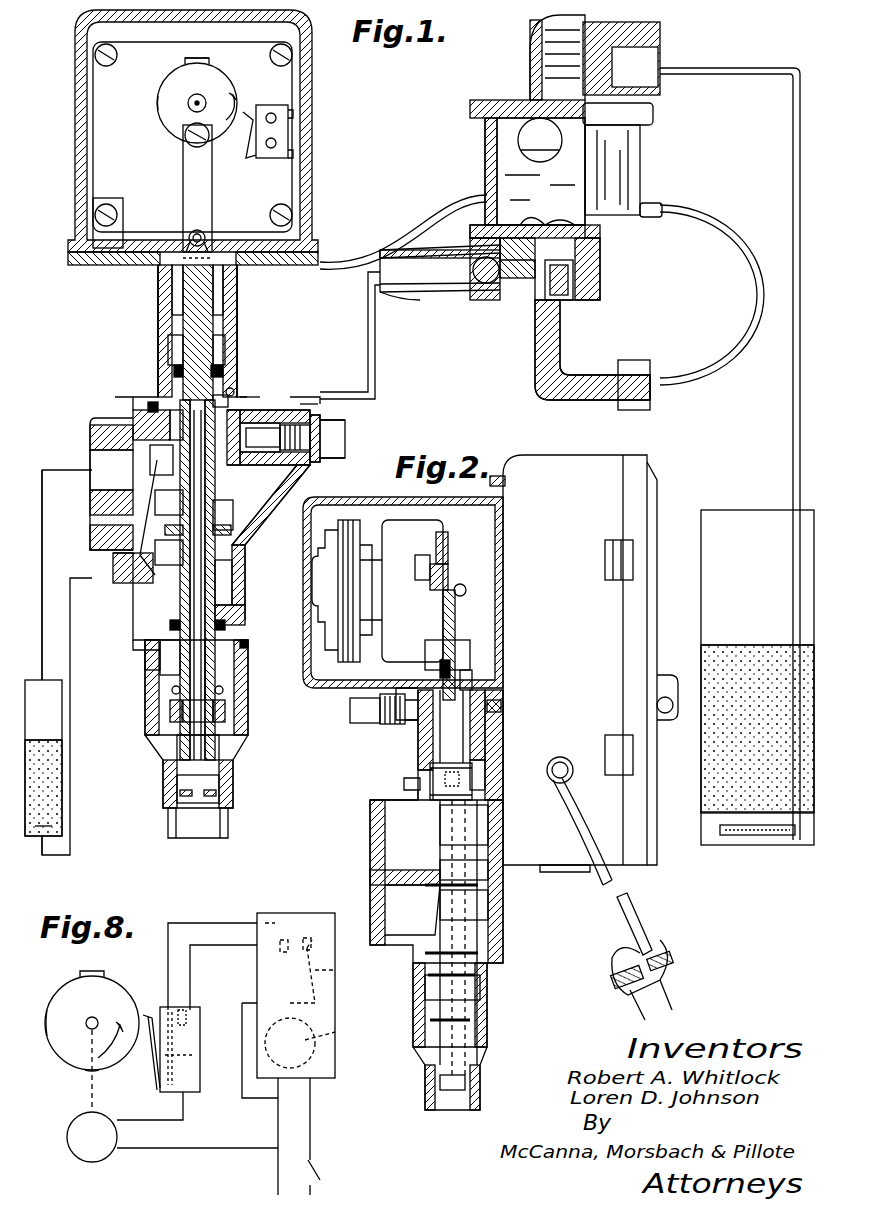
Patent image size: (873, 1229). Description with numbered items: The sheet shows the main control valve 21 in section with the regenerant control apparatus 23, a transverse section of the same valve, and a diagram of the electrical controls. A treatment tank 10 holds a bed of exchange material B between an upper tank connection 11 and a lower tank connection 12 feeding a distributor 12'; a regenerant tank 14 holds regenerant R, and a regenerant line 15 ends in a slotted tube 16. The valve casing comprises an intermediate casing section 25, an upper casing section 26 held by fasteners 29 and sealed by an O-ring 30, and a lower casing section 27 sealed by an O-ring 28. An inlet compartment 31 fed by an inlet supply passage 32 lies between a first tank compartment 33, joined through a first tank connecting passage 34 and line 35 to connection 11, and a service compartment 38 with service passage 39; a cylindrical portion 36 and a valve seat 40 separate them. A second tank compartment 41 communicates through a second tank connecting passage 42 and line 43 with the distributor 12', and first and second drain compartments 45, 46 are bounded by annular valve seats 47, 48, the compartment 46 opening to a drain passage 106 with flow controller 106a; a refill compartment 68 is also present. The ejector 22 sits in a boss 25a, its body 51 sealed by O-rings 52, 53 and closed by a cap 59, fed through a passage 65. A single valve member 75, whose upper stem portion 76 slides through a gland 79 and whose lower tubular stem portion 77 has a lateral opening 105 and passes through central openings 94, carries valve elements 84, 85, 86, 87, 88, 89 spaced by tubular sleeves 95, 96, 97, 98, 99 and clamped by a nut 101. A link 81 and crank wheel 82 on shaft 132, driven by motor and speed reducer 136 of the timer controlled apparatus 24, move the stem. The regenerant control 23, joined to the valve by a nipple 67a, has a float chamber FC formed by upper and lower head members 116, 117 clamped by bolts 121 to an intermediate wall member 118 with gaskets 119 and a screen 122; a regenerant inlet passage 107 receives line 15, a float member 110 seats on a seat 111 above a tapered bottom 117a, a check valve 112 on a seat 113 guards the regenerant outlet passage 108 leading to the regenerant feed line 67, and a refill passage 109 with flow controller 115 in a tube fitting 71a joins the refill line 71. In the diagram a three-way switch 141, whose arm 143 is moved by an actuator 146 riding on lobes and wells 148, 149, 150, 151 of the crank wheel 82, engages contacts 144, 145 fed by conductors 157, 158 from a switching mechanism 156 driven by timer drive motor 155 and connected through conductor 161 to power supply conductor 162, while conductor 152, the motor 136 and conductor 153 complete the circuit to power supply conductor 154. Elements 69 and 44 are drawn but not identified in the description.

In FIG. 1, the timer controlled apparatus 24 is at (74, 107).
In FIG. 2, the timer controlled apparatus 24 is at (412, 512).
In FIG. 1, the motor and speed reducer 136 is at (170, 55).
In FIG. 2, the motor and speed reducer 136 is at (345, 518).
In FIG. 8, the motor and speed reducer 136 is at (78, 1155).
In FIG. 1, the cam lobe or well 150 is at (200, 62).
In FIG. 8, the cam lobe or well 150 is at (80, 976).
In FIG. 1, the cam lobe or well 149 is at (160, 88).
In FIG. 8, the cam lobe or well 149 is at (60, 1005).
In FIG. 1, the shaft 132 is at (213, 82).
In FIG. 8, the shaft 132 is at (88, 1025).
In FIG. 1, the cam lobe or well 151 is at (236, 97).
In FIG. 8, the cam lobe or well 151 is at (152, 957).
In FIG. 1, the crank wheel 82 is at (160, 116).
In FIG. 2, the crank wheel 82 is at (452, 552).
In FIG. 8, the crank wheel 82 is at (55, 1018).
In FIG. 1, the link 81 is at (185, 172).
In FIG. 2, the link 81 is at (450, 626).
In FIG. 1, the cam lobe or well 148 is at (225, 148).
In FIG. 8, the cam lobe or well 148 is at (82, 1075).
In FIG. 1, the gland 79 is at (185, 240).
In FIG. 2, the gland 79 is at (478, 688).
In FIG. 1, the upper stem portion 76 is at (218, 250).
In FIG. 2, the upper stem portion 76 is at (455, 690).
In FIG. 1, the refill compartment 68 is at (170, 292).
In FIG. 2, the refill compartment 68 is at (490, 700).
In FIG. 1, the bushing 69 is at (172, 318).
In FIG. 2, the bushing 69 is at (495, 720).
In FIG. 1, the valve member 75 is at (214, 313).
In FIG. 1, the first drain compartment 45 is at (226, 345).
In FIG. 2, the first drain compartment 45 is at (490, 745).
In FIG. 1, the upper casing section 26 is at (222, 370).
In FIG. 1, the upper valve element 84 is at (178, 368).
In FIG. 1, the annular valve seat 47 is at (233, 392).
In FIG. 2, the annular valve seat 47 is at (482, 775).
In FIG. 1, the ejector body 51 is at (300, 395).
In FIG. 1, the main control valve 21 is at (155, 383).
In FIG. 1, the tubular sleeve 95 is at (224, 400).
In FIG. 1, the O-ring 30 is at (258, 398).
In FIG. 2, the O-ring 30 is at (398, 800).
In FIG. 1, the boss 25a is at (300, 405).
In FIG. 1, the valve element 85 is at (152, 408).
In FIG. 1, the ejector 22 is at (338, 419).
In FIG. 1, the first tank connecting passage 34 is at (98, 448).
In FIG. 1, the first tank compartment 33 is at (150, 448).
In FIG. 2, the first tank compartment 33 is at (478, 820).
In FIG. 1, the lateral opening 105 is at (185, 430).
In FIG. 1, the O-ring 52 is at (260, 437).
In FIG. 1, the cap 59 is at (316, 437).
In FIG. 1, the cylindrical casing portion 36 is at (168, 468).
In FIG. 1, the O-ring 53 is at (298, 450).
In FIG. 1, the lower tubular stem portion 77 is at (111, 472).
In FIG. 1, the valve element 86 is at (150, 500).
In FIG. 1, the tubular sleeve 96 is at (167, 502).
In FIG. 1, the passage 65 is at (280, 505).
In FIG. 1, the inlet compartment 31 is at (240, 515).
In FIG. 2, the inlet compartment 31 is at (478, 870).
In FIG. 1, the service compartment 38 is at (248, 548).
In FIG. 2, the service compartment 38 is at (478, 910).
In FIG. 1, the intermediate casing section 25 is at (230, 560).
In FIG. 1, the valve seat 40 is at (133, 595).
In FIG. 2, the valve seat 40 is at (480, 886).
In FIG. 1, the tubular sleeve 97 is at (167, 552).
In FIG. 1, the chamber 44 is at (225, 585).
In FIG. 1, the second tank compartment 41 is at (246, 610).
In FIG. 2, the second tank compartment 41 is at (478, 953).
In FIG. 1, the tubular sleeve 98 is at (172, 626).
In FIG. 1, the O-ring 28 is at (248, 648).
In FIG. 1, the line 43 is at (70, 650).
In FIG. 1, the second tank connecting passage 42 is at (140, 640).
In FIG. 1, the valve element 88 is at (155, 660).
In FIG. 1, the annular valve seat 48 is at (167, 667).
In FIG. 2, the annular valve seat 48 is at (482, 995).
In FIG. 1, the tubular sleeve 99 is at (215, 675).
In FIG. 1, the second drain compartment 46 is at (235, 692).
In FIG. 2, the second drain compartment 46 is at (478, 1022).
In FIG. 1, the nut 101 is at (225, 712).
In FIG. 1, the valve element 89 is at (178, 712).
In FIG. 1, the lower casing section 27 is at (240, 730).
In FIG. 1, the central opening 94 is at (198, 748).
In FIG. 1, the flow controller 106a is at (210, 780).
In FIG. 2, the flow controller 106a is at (465, 1080).
In FIG. 1, the drain passage 106 is at (210, 836).
In FIG. 1, the upper tank connection 11 is at (42, 660).
In FIG. 1, the treatment tank 10 is at (62, 698).
In FIG. 1, the bed of exchange material B is at (55, 778).
In FIG. 1, the distributor 12' is at (70, 812).
In FIG. 1, the lower tank connection 12 is at (32, 858).
In FIG. 1, the line 35 is at (44, 520).
In FIG. 1, the refill line 71 is at (412, 205).
In FIG. 2, the refill line 71 is at (355, 712).
In FIG. 1, the upper head member 116 is at (530, 90).
In FIG. 1, the gaskets 119 is at (480, 106).
In FIG. 1, the float member 110 is at (497, 128).
In FIG. 1, the intermediate wall member 118 is at (497, 144).
In FIG. 1, the float chamber FC is at (497, 182).
In FIG. 1, the tapered bottom 117a is at (525, 222).
In FIG. 1, the float seat 111 is at (556, 222).
In FIG. 1, the clamping bolts 121 is at (615, 200).
In FIG. 1, the screen 122 is at (618, 114).
In FIG. 1, the regenerant inlet passage 107 is at (621, 58).
In FIG. 1, the regenerant control apparatus 23 is at (660, 125).
In FIG. 1, the lower head member 117 is at (660, 215).
In FIG. 1, the check valve 112 is at (476, 270).
In FIG. 1, the nipple 67a is at (440, 300).
In FIG. 1, the check valve seat 113 is at (478, 302).
In FIG. 1, the regenerant outlet passage 108 is at (518, 300).
In FIG. 1, the refill passage 109 is at (590, 280).
In FIG. 1, the flow controller 115 is at (560, 300).
In FIG. 1, the tube fitting 71a is at (538, 362).
In FIG. 1, the regenerant feed line 67 is at (378, 360).
In FIG. 1, the regenerant line 15 is at (793, 385).
In FIG. 1, the regenerant tank 14 is at (704, 545).
In FIG. 1, the regenerant R is at (728, 640).
In FIG. 1, the slotted tube 16 is at (748, 838).
In FIG. 2, the fasteners 29 is at (408, 778).
In FIG. 2, the inlet supply passage 32 is at (380, 842).
In FIG. 2, the service passage 39 is at (395, 918).
In FIG. 8, the conductor 158 is at (218, 923).
In FIG. 8, the conductor 157 is at (212, 945).
In FIG. 8, the contact 145 is at (166, 1000).
In FIG. 8, the contact 144 is at (195, 995).
In FIG. 8, the three-way switch 141 is at (200, 1025).
In FIG. 8, the switch arm 143 is at (185, 1060).
In FIG. 8, the actuator 146 is at (160, 1058).
In FIG. 8, the conductor 152 is at (170, 1118).
In FIG. 8, the conductor 153 is at (168, 1150).
In FIG. 8, the power supply conductor 154 is at (278, 1168).
In FIG. 8, the conductor 161 is at (240, 1098).
In FIG. 8, the power supply conductor 162 is at (312, 1132).
In FIG. 8, the switching mechanism 156 is at (325, 975).
In FIG. 8, the timer drive motor 155 is at (320, 1035).
In FIG. 1, the valve element 87 is at (170, 585).